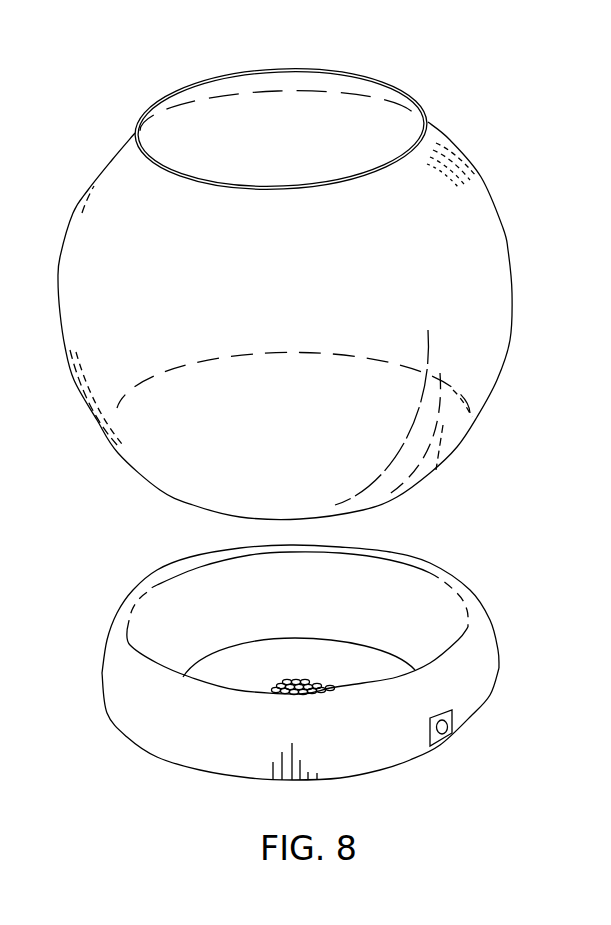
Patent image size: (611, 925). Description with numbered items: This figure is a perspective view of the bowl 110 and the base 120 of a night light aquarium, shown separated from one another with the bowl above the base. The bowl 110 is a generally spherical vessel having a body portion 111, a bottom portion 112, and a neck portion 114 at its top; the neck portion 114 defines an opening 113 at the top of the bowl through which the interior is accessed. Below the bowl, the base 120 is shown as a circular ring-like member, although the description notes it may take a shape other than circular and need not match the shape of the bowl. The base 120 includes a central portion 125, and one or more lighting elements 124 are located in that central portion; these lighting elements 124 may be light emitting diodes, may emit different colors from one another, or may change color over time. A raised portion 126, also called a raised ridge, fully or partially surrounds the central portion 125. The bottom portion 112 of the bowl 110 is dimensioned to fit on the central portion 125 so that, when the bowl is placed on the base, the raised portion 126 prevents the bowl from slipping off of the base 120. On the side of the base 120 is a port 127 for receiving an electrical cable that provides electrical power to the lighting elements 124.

The bowl 110 is at (512, 295).
The body portion 111 is at (112, 282).
The bottom portion 112 is at (307, 458).
The opening 113 is at (300, 94).
The neck portion 114 is at (138, 127).
The base 120 is at (483, 688).
The lighting elements 124 is at (298, 680).
The central portion 125 is at (357, 640).
The raised portion 126 is at (131, 646).
The port 127 is at (448, 735).